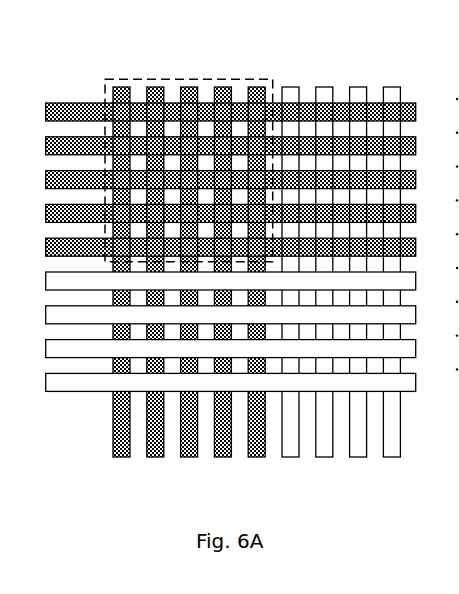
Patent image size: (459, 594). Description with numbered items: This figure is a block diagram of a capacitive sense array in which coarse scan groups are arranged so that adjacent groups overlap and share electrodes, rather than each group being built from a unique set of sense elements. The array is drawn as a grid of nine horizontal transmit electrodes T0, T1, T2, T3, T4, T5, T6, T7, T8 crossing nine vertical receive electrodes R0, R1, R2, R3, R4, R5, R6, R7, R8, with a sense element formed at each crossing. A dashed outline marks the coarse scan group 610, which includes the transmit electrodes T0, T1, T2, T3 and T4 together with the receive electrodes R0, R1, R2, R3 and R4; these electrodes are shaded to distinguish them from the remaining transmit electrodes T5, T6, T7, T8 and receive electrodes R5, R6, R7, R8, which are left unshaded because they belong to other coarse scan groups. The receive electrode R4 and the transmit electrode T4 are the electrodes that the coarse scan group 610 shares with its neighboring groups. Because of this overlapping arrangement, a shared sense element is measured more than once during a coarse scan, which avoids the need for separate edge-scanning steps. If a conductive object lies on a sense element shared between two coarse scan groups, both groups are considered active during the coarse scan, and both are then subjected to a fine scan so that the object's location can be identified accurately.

The coarse scan group 610 is at (180, 79).
The transmit electrode T0 is at (219, 109).
The transmit electrode T1 is at (219, 142).
The transmit electrode T2 is at (219, 176).
The transmit electrode T3 is at (219, 210).
The transmit electrode T4 is at (219, 244).
The transmit electrode T5 is at (219, 278).
The transmit electrode T6 is at (219, 311).
The transmit electrode T7 is at (219, 345).
The transmit electrode T8 is at (219, 379).
The receive electrode R0 is at (116, 284).
The receive electrode R1 is at (149, 284).
The receive electrode R2 is at (183, 284).
The receive electrode R3 is at (217, 284).
The receive electrode R4 is at (251, 284).
The receive electrode R5 is at (285, 284).
The receive electrode R6 is at (318, 284).
The receive electrode R7 is at (352, 284).
The receive electrode R8 is at (386, 284).